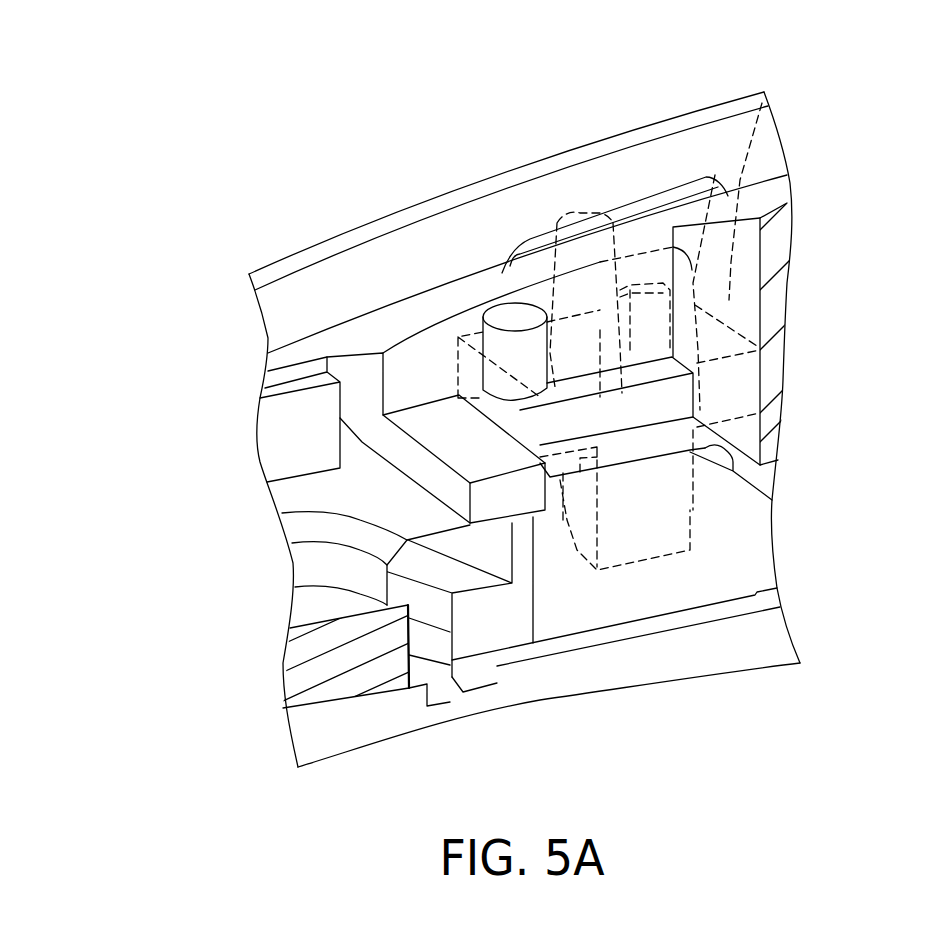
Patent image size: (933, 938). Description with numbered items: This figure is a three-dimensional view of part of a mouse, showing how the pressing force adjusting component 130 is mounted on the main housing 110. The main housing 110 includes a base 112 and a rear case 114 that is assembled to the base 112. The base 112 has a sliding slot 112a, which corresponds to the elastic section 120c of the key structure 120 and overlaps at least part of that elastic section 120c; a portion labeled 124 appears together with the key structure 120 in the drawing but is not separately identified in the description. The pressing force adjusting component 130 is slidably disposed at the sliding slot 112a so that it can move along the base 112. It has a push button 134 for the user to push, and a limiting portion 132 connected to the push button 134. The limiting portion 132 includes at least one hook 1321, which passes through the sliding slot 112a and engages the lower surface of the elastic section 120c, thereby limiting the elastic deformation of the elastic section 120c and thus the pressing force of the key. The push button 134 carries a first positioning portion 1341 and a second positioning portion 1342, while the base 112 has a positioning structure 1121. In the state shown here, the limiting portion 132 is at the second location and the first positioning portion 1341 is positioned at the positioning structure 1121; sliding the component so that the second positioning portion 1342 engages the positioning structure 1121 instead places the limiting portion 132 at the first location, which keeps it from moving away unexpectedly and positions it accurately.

The main housing 110 is at (507, 429).
The rear case 114 is at (277, 268).
The base 112 is at (357, 380).
The sliding slot 112a is at (518, 422).
The positioning structure 1121 is at (500, 318).
The first positioning portion 1341 is at (516, 313).
The second positioning portion 1342 is at (610, 297).
The push button 134 is at (729, 300).
The pressing force adjusting component 130 is at (763, 88).
The elastic section 120c is at (640, 447).
The frame portion 124 is at (365, 497).
The key structure 120 is at (430, 616).
The hook 1321 is at (643, 563).
The limiting portion 132 is at (641, 611).